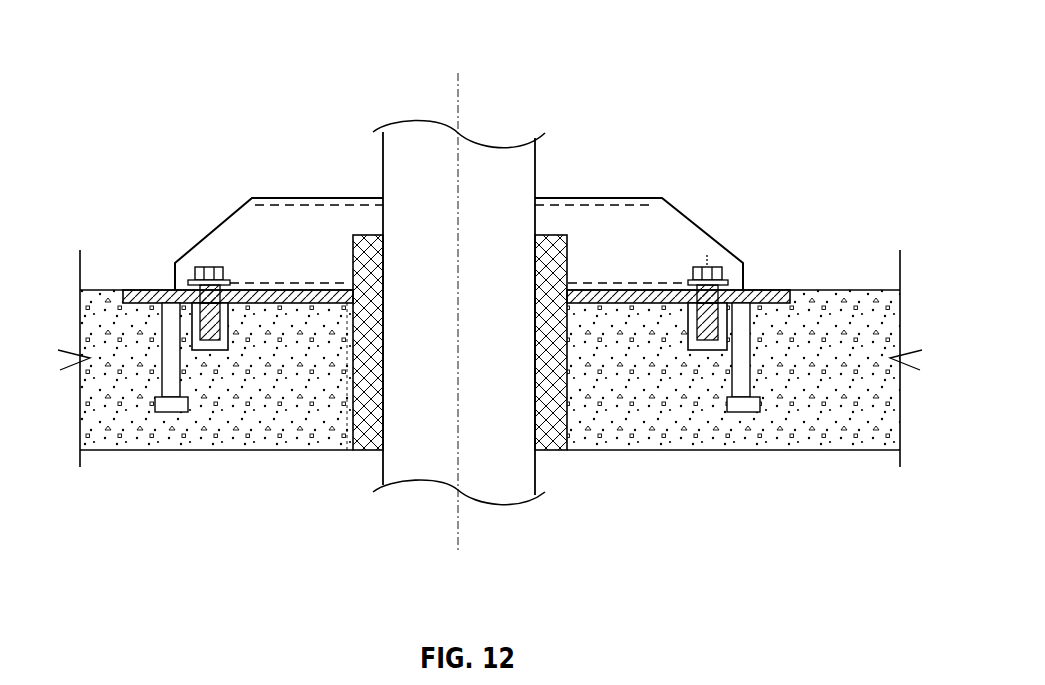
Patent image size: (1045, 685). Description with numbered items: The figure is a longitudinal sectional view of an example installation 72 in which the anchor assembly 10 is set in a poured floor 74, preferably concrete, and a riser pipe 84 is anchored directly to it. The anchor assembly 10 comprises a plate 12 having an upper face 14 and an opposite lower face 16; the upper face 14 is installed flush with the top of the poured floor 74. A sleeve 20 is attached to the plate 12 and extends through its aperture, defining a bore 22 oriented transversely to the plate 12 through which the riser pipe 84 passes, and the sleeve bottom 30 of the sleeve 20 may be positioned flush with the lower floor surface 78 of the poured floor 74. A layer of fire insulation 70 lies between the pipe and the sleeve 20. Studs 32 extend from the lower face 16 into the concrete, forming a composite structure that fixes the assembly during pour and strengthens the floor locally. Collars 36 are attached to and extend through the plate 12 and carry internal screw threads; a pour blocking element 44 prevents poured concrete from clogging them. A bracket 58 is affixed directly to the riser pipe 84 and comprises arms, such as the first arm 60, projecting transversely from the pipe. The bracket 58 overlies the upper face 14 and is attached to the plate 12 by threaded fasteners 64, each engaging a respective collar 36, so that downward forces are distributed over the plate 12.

The anchor assembly 10 is at (800, 62).
The plate 12 is at (750, 293).
The upper face 14 is at (160, 290).
The lower face 16 is at (290, 307).
The sleeve 20 is at (347, 403).
The bore 22 is at (512, 386).
The sleeve bottom 30 is at (353, 450).
The studs 32 is at (750, 372).
The collars 36 is at (197, 322).
The pour blocking element 44 is at (658, 215).
The bracket 58 is at (702, 220).
The first arm 60 is at (293, 210).
The threaded fasteners 64 is at (208, 267).
The fire insulation 70 is at (370, 450).
The installation 72 is at (504, 201).
The poured floor 74 is at (118, 430).
The lower floor surface 78 is at (797, 452).
The riser pipe 84 is at (535, 177).